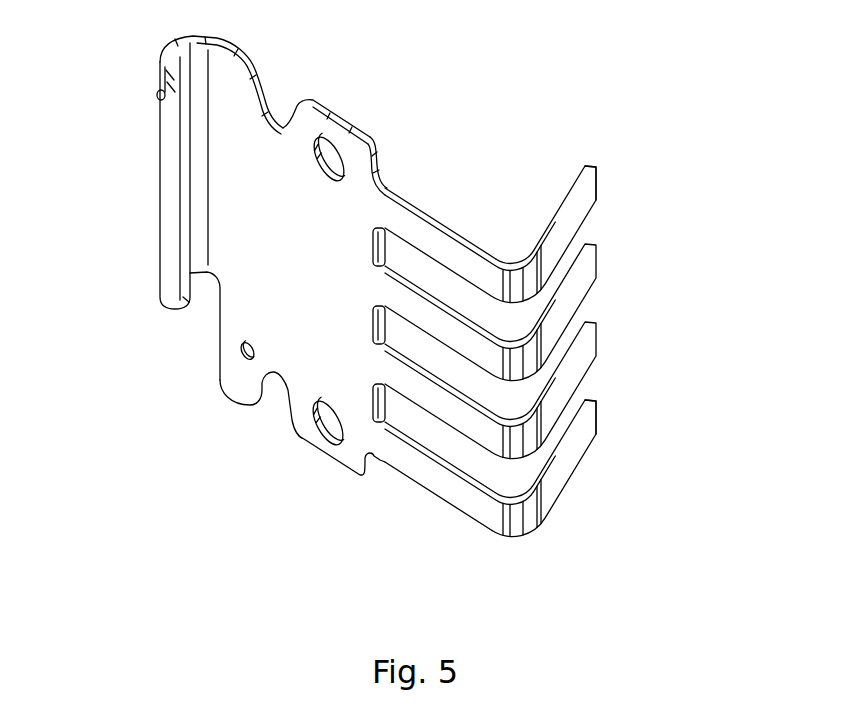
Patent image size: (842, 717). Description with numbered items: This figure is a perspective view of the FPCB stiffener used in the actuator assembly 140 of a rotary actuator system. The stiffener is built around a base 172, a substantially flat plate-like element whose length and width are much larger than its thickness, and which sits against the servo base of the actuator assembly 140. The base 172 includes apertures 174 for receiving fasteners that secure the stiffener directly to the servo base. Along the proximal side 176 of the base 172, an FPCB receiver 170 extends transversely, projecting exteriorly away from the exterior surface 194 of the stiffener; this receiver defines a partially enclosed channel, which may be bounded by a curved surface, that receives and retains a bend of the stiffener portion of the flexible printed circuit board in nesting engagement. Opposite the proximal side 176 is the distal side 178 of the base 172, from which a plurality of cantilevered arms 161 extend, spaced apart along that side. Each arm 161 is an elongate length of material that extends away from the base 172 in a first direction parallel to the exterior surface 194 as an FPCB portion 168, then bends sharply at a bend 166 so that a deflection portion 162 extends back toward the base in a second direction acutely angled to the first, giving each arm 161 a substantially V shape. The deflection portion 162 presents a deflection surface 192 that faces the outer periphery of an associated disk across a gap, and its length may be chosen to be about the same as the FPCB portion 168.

The actuator assembly 140 is at (257, 43).
The cantilevered arm 161 is at (612, 167).
The deflection portion 162 is at (598, 200).
The bend 166 is at (518, 352).
The FPCB portion 168 is at (440, 215).
The FPCB receiver 170 is at (165, 57).
The base 172 is at (368, 137).
The aperture 174 is at (325, 148).
The proximal side 176 is at (220, 313).
The distal side 178 is at (383, 162).
The deflection surface 192 is at (573, 222).
The exterior surface 194 is at (273, 313).